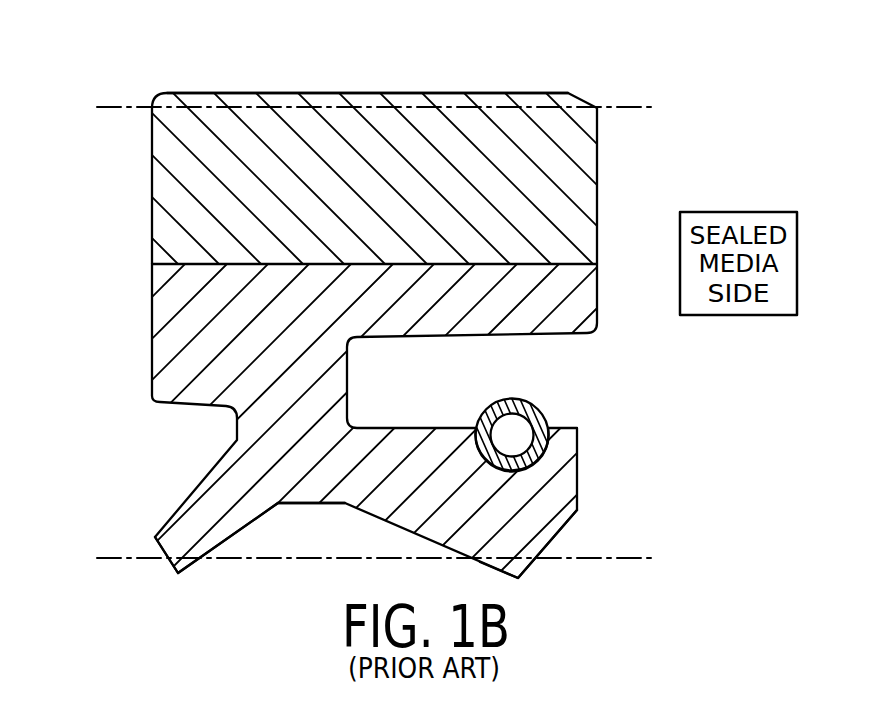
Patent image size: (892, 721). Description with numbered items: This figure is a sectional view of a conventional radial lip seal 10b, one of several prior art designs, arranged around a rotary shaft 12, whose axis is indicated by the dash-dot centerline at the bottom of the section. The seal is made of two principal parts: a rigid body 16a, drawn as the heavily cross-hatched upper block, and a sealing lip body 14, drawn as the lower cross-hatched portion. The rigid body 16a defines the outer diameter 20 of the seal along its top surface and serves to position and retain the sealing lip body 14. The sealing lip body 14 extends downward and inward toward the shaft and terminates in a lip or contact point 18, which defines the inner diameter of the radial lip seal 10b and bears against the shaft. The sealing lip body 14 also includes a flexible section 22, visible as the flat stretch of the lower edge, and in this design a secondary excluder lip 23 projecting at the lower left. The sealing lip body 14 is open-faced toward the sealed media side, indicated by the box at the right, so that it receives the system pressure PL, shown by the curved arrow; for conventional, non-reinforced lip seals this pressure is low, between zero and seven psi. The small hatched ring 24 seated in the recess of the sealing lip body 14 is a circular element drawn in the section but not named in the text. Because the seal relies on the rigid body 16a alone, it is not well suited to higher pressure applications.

The radial lip seal 10b is at (161, 80).
The rotary shaft 12 is at (114, 558).
The sealing lip body 14 is at (158, 361).
The rigid body 16a is at (178, 200).
The lip or contact point 18 is at (519, 579).
The outer diameter 20 is at (410, 93).
The flexible section 22 is at (343, 498).
The secondary excluder lip 23 is at (197, 523).
The O-ring energizer 24 is at (512, 435).
The system pressure PL is at (561, 378).